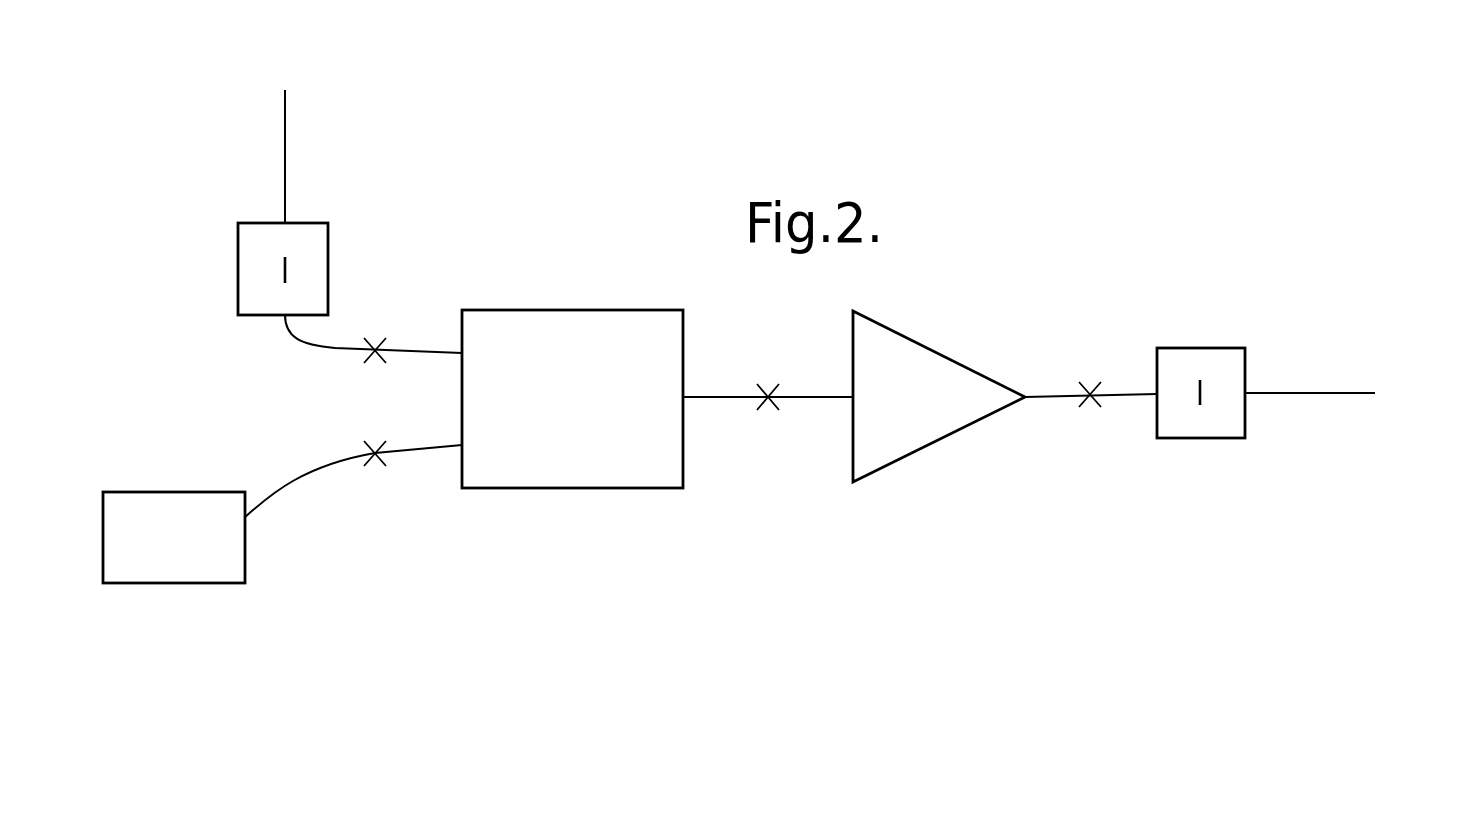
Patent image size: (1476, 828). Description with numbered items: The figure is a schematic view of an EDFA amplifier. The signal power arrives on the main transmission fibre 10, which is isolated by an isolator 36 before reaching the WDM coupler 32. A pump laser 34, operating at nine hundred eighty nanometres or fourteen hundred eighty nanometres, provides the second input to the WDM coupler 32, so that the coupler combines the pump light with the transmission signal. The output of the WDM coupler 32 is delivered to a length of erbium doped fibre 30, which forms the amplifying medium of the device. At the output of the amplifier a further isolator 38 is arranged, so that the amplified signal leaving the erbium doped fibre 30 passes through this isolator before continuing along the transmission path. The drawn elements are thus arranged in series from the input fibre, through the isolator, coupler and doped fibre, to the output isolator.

The main transmission fibre 10 is at (285, 137).
The isolator 36 is at (328, 253).
The pump laser 34 is at (168, 492).
The WDM coupler 32 is at (562, 488).
The erbium doped fibre 30 is at (922, 447).
The further isolator 38 is at (1202, 438).